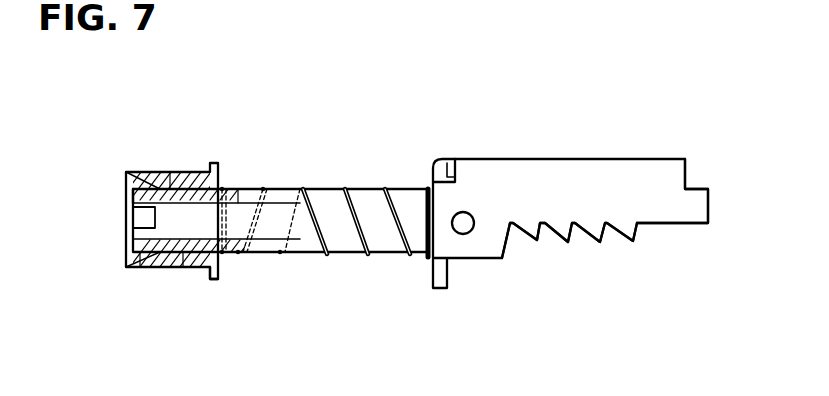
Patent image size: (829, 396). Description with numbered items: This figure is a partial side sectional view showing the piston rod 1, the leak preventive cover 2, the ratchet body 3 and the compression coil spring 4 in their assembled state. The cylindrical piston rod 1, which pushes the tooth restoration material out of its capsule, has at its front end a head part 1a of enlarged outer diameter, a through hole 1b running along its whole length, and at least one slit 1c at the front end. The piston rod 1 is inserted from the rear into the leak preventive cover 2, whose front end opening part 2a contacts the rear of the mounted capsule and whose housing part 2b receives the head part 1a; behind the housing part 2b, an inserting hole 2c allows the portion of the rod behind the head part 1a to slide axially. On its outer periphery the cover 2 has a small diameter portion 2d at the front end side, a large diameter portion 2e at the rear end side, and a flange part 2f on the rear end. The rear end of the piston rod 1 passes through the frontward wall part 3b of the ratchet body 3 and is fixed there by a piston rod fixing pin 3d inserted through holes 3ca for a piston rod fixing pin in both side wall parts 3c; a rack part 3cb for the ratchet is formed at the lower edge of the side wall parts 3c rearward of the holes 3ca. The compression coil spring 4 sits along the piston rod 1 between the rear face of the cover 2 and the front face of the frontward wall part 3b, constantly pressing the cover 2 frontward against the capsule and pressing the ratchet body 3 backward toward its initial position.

The piston rod 1 is at (325, 189).
The head part 1a is at (135, 188).
The through hole 1b is at (238, 183).
The slit 1c is at (150, 220).
The leak preventive cover 2 is at (153, 173).
The front end opening part 2a is at (127, 175).
The housing part 2b is at (127, 260).
The inserting hole 2c is at (187, 180).
The small diameter portion 2d is at (142, 270).
The large diameter portion 2e is at (183, 262).
The flange part 2f is at (220, 273).
The ratchet body 3 is at (568, 159).
The frontward wall part 3b is at (440, 162).
The side wall part 3c is at (635, 182).
The hole for piston rod fixing pin 3ca is at (475, 260).
The rack part 3cb is at (565, 243).
The piston rod fixing pin 3d is at (465, 212).
The compression coil spring 4 is at (335, 256).